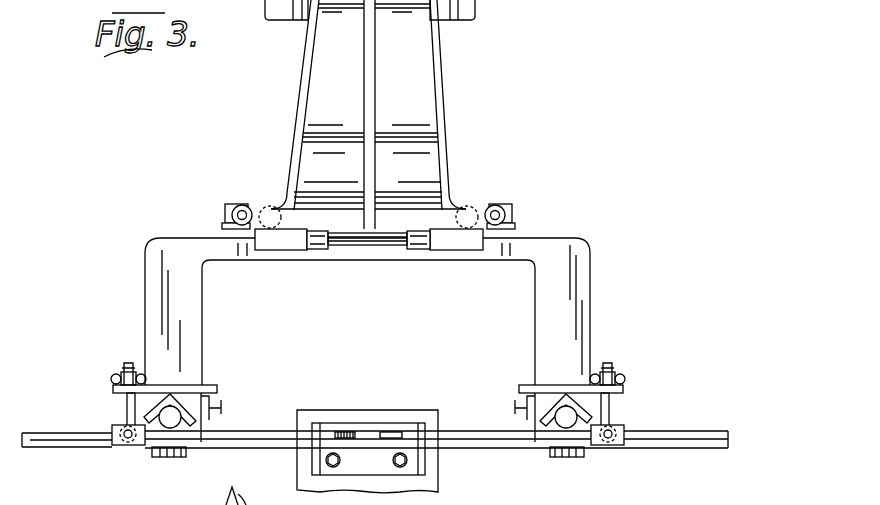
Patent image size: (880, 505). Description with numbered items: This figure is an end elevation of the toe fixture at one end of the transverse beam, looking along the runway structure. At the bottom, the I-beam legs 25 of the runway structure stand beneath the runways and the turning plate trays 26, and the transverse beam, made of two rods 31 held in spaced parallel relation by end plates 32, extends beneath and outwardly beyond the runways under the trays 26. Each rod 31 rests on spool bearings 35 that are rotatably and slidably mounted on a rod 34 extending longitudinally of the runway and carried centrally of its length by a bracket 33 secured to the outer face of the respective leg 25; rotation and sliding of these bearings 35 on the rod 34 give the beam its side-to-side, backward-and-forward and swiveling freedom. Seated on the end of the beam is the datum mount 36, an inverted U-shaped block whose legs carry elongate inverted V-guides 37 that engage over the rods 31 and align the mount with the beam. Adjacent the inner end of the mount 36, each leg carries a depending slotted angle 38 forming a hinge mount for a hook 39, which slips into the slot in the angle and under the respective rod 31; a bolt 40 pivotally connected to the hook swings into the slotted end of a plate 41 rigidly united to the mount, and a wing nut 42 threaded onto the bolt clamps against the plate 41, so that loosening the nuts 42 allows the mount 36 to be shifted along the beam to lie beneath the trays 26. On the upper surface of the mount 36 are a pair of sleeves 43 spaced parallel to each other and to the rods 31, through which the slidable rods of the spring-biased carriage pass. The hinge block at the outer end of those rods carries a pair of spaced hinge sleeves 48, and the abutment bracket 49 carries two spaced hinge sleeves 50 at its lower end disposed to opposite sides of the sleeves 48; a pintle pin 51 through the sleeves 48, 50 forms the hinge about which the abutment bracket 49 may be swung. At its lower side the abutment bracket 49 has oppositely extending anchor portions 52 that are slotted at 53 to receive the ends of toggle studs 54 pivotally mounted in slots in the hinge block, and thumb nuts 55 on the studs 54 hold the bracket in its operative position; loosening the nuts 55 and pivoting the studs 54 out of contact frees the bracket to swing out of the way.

The I-beam legs 25 is at (432, 488).
The turning plate trays 26 is at (470, 14).
The rods 31 is at (172, 420).
The end plates 32 is at (255, 431).
The bracket 33 is at (422, 424).
The rod 34 is at (60, 445).
The clamp 35 is at (169, 458).
The datum mount 36 is at (185, 318).
The inverted V-guides 37 is at (177, 395).
The slotted angle 38 is at (218, 402).
The hook 39 is at (142, 447).
The bolt 40 is at (127, 408).
The plate 41 is at (113, 389).
The wing nut 42 is at (117, 375).
The sleeves 43 is at (270, 206).
The hinge sleeves 48 is at (320, 246).
The abutment bracket 49 is at (420, 78).
The hinge sleeves 50 is at (278, 246).
The pintle pin 51 is at (385, 243).
The anchor portions 52 is at (233, 226).
The slots 53 is at (233, 216).
The toggle studs 54 is at (236, 212).
The thumb nuts 55 is at (238, 206).